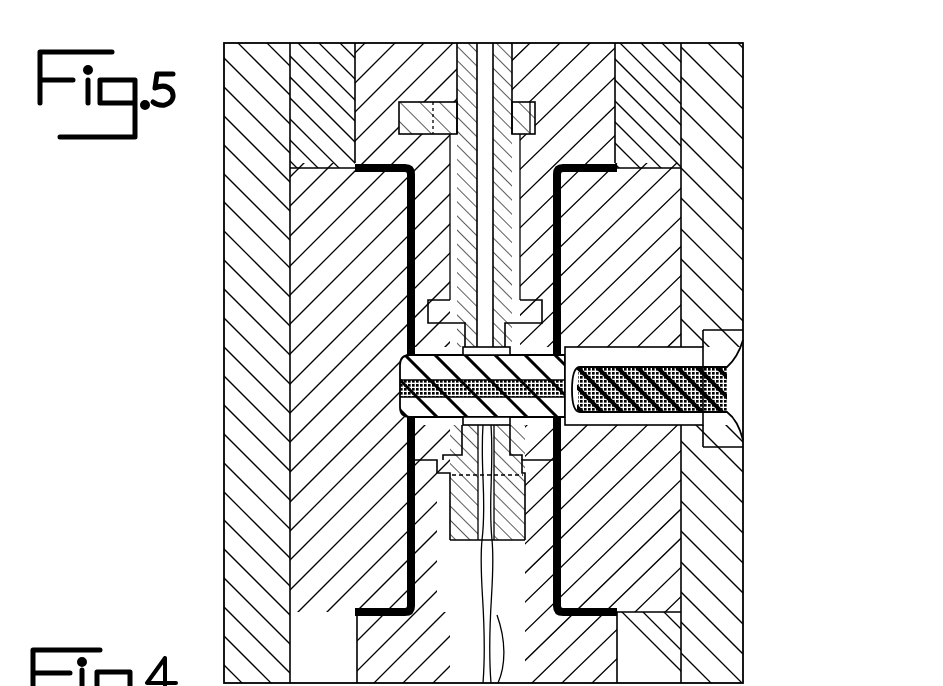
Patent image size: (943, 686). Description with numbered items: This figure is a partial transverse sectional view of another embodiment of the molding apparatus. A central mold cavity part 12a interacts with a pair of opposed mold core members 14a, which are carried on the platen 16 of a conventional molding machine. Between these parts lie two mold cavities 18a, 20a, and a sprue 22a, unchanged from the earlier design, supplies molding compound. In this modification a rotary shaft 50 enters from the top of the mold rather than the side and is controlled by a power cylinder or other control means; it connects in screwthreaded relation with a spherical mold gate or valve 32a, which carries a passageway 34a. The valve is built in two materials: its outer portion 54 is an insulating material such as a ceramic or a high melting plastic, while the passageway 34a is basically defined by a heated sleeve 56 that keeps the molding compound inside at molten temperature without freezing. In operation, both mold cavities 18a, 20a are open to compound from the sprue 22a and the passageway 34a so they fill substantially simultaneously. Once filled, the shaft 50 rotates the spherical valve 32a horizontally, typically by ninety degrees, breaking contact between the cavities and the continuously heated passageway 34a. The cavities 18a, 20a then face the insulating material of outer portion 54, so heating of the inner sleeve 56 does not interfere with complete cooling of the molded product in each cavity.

The central mold cavity part 12a is at (540, 34).
The mold core members 14a is at (336, 40).
The platen 16 is at (737, 180).
The mold cavity 18a is at (410, 178).
The mold cavity 20a is at (562, 569).
The sprue 22a is at (724, 440).
The spherical mold gate or valve 32a is at (436, 322).
The passageway 34a is at (412, 448).
The rotary shaft 50 is at (522, 167).
The outer portion 54 is at (545, 340).
The heated sleeve 56 is at (408, 364).